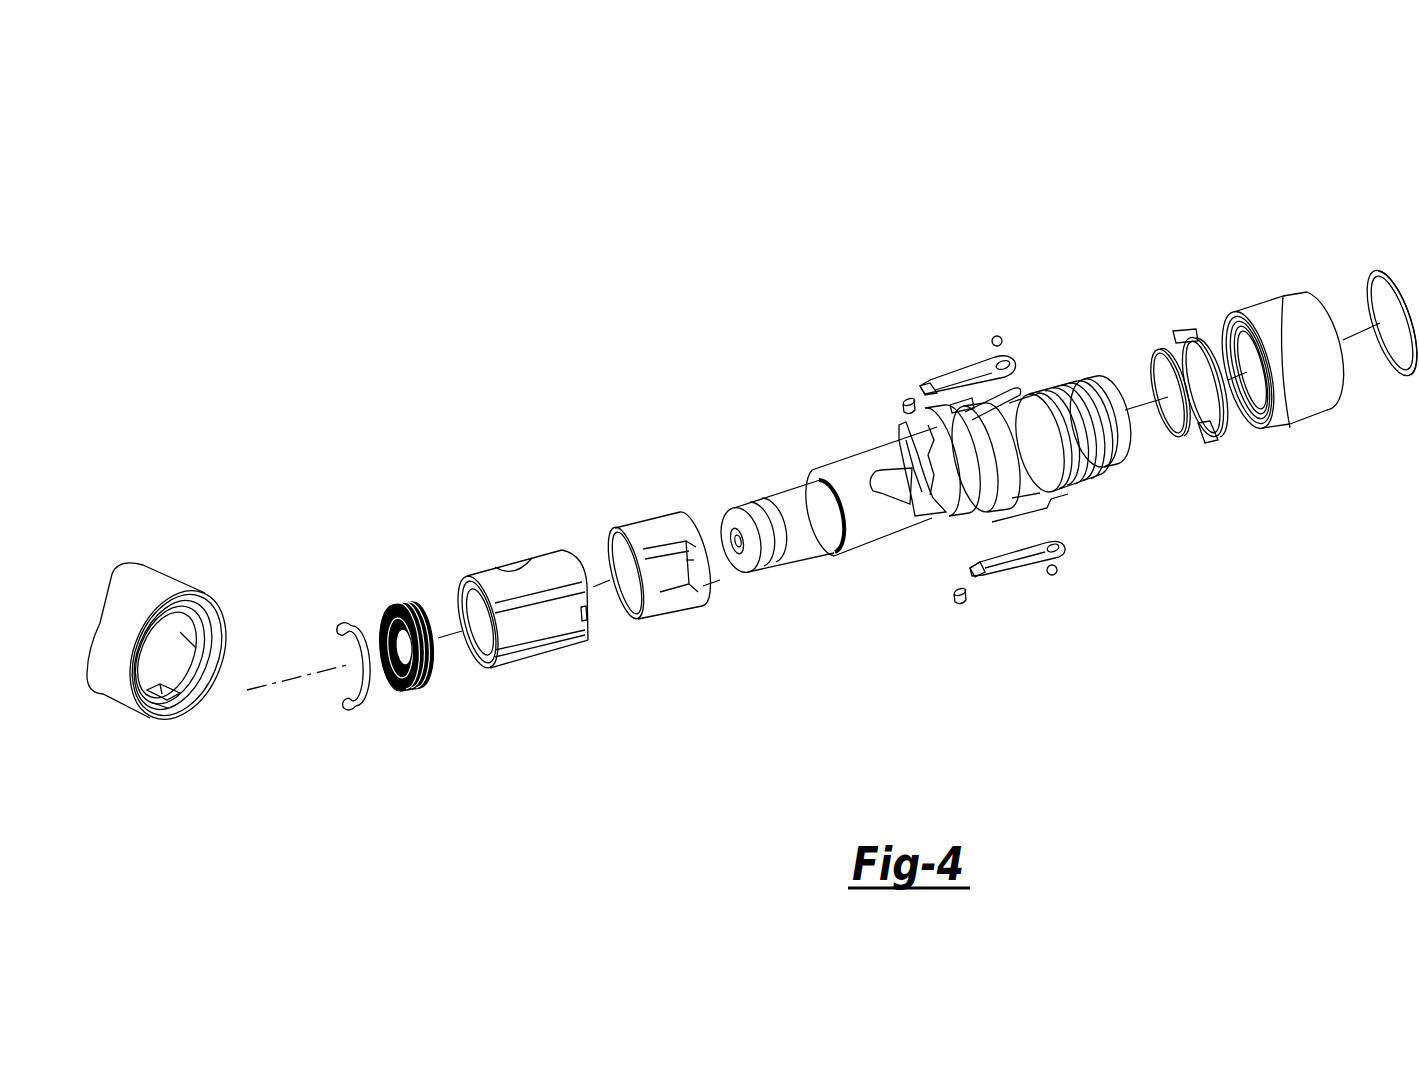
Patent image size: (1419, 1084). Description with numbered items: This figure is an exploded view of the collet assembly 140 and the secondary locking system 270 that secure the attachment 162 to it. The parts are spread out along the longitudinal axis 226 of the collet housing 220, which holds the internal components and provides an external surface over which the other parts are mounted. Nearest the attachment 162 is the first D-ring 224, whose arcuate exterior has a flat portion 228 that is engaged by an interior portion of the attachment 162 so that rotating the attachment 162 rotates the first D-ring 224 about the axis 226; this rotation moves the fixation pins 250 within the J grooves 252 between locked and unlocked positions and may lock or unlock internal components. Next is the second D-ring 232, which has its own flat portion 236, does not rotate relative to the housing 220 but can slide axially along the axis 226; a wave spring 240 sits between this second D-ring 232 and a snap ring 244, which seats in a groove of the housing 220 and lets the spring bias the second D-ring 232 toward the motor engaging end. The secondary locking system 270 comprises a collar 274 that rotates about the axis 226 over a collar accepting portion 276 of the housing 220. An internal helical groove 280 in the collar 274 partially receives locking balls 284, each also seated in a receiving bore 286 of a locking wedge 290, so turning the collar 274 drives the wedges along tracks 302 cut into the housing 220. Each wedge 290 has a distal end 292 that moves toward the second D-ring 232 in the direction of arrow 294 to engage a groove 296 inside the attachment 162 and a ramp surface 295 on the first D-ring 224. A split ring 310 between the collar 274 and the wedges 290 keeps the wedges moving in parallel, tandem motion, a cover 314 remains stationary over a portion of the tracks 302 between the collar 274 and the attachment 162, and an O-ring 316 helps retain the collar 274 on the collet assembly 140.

The collet assembly 140 is at (784, 690).
The attachment 162 is at (158, 572).
The collet housing 220 is at (923, 526).
The first D-ring 224 is at (708, 534).
The longitudinal axis 226 is at (1358, 327).
The flat portion 228 is at (665, 588).
The second D-ring 232 is at (555, 570).
The flat portion 236 is at (547, 620).
The wave spring 240 is at (415, 606).
The snap ring 244 is at (355, 622).
The fixation pins 250 is at (903, 408).
The J grooves 252 is at (908, 468).
The secondary locking system 270 is at (1272, 155).
The collar 274 is at (1303, 385).
The collar accepting portion 276 is at (1034, 518).
The internal helical groove 280 is at (1311, 343).
The locking balls 284 is at (996, 335).
The receiving bore 286 is at (1012, 353).
The locking wedge 290 is at (980, 479).
The distal end 292 is at (928, 386).
The direction of arrow 294 is at (650, 367).
The ramp surface 295 is at (685, 571).
The groove 296 is at (182, 692).
The tracks 302 is at (1017, 394).
The split ring 310 is at (1158, 346).
The cover 314 is at (1190, 333).
The O-ring 316 is at (1392, 288).